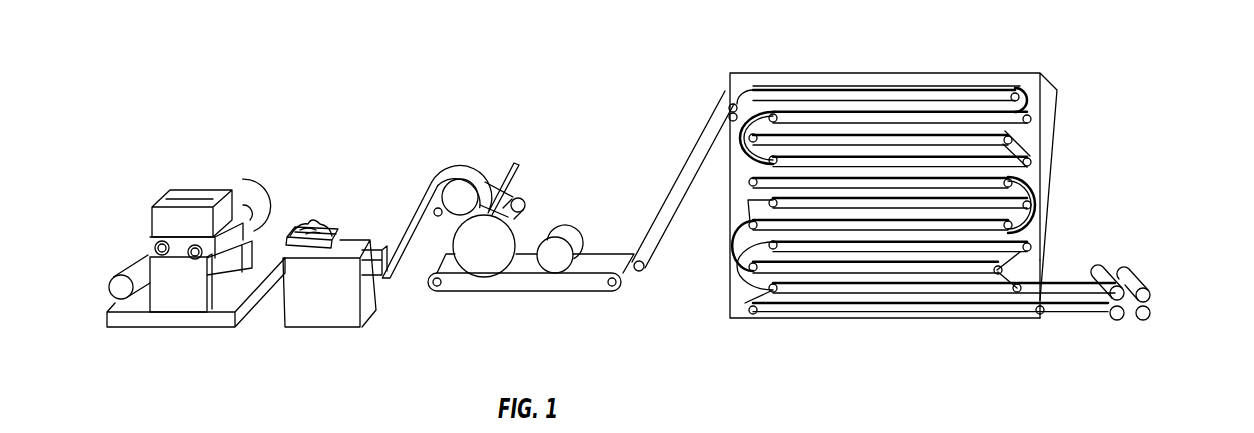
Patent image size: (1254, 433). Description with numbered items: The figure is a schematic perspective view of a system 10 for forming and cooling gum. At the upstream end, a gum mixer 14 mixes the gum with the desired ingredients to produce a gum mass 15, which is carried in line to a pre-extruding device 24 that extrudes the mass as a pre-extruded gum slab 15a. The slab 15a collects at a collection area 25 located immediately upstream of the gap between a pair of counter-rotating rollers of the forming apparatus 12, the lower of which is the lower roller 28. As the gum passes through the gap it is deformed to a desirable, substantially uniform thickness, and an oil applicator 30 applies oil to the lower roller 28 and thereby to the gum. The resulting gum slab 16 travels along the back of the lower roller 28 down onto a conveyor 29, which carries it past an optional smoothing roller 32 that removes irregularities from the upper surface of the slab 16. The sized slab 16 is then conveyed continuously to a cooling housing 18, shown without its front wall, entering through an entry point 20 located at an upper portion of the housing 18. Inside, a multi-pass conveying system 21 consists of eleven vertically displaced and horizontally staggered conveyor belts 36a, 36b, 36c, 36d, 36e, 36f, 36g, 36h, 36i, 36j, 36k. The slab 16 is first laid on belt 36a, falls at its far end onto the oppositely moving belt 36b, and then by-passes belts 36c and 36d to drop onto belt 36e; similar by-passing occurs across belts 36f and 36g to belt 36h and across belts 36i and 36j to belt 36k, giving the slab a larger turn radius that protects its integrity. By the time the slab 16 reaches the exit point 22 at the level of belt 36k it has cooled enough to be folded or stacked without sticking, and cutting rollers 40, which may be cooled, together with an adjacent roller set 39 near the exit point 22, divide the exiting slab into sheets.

The system for forming and cooling gum 10 is at (485, 78).
The forming apparatus 12 is at (580, 160).
The gum mixer 14 is at (162, 222).
The gum mass 15 is at (333, 222).
The pre-extruded gum slab 15a is at (425, 202).
The gum slab 16 is at (610, 262).
The cooling housing 18 is at (907, 83).
The entry point 20 is at (728, 95).
The multi-pass conveying system 21 is at (977, 95).
The exit point 22 is at (1040, 282).
The pre-extruding device 24 is at (335, 318).
The collection area 25 is at (506, 168).
The lower roller 28 is at (490, 265).
The conveyor 29 is at (577, 283).
The oil applicator 30 is at (528, 206).
The smoothing roller 32 is at (552, 248).
The conveyor belt 36a is at (1020, 94).
The conveyor belt 36b is at (1031, 118).
The conveyor belt 36c is at (1012, 140).
The conveyor belt 36d is at (1031, 162).
The conveyor belt 36e is at (1013, 183).
The conveyor belt 36f is at (1031, 206).
The conveyor belt 36g is at (750, 226).
The conveyor belt 36h is at (1031, 247).
The conveyor belt 36i is at (750, 268).
The conveyor belt 36j is at (770, 291).
The conveyor belt 36k is at (755, 313).
The nip roller 39 is at (1112, 272).
The cutting rollers 40 is at (1150, 282).